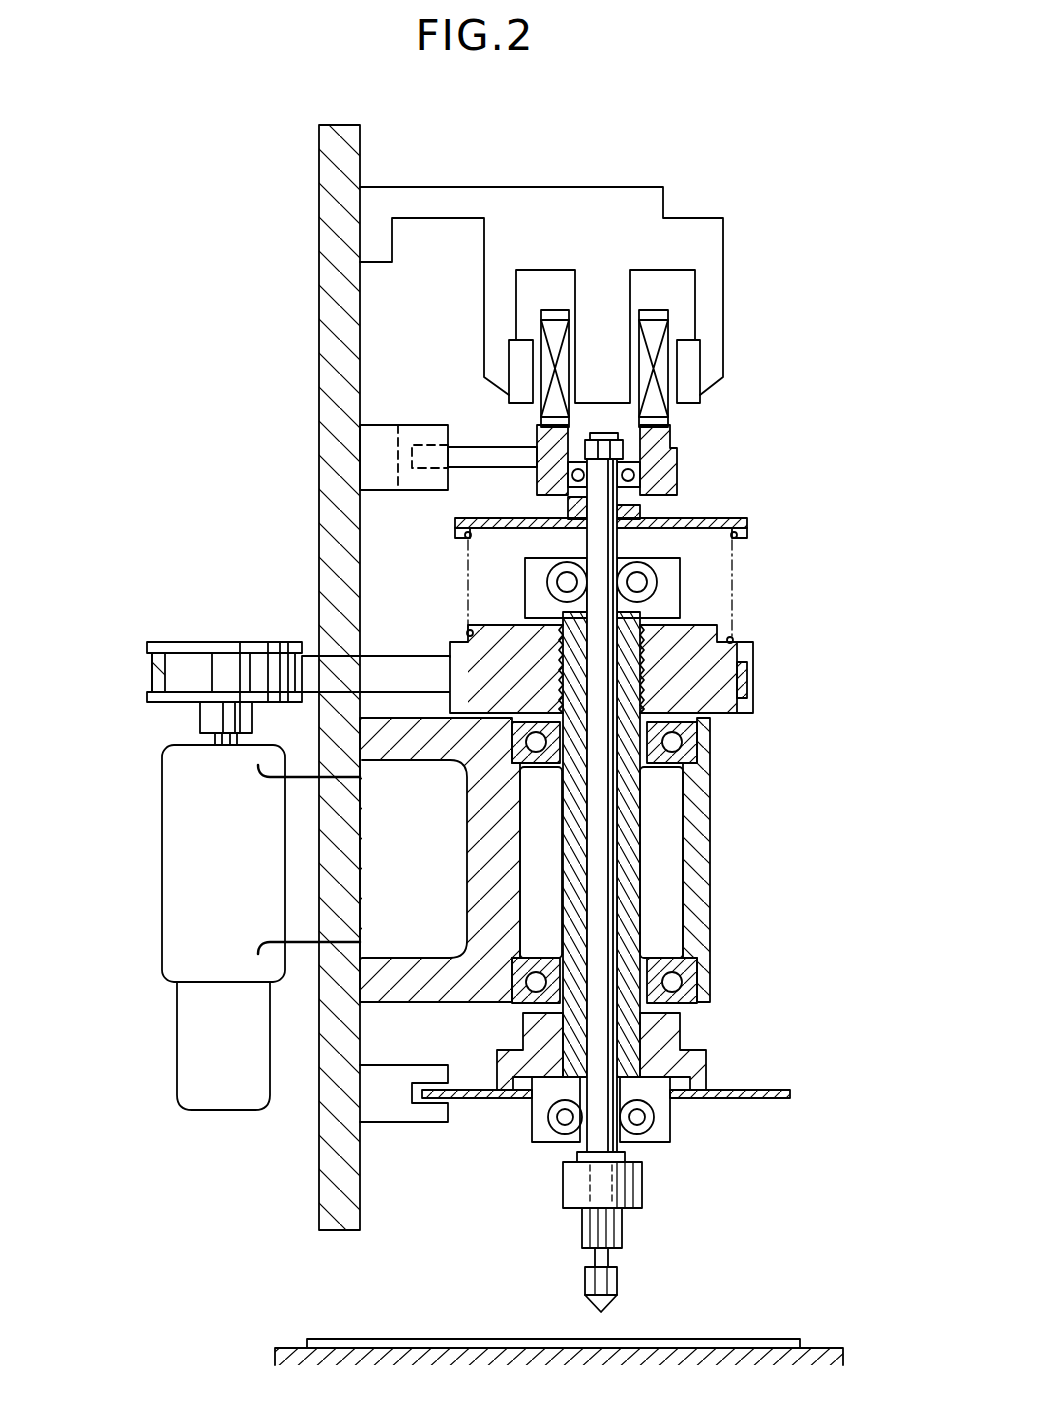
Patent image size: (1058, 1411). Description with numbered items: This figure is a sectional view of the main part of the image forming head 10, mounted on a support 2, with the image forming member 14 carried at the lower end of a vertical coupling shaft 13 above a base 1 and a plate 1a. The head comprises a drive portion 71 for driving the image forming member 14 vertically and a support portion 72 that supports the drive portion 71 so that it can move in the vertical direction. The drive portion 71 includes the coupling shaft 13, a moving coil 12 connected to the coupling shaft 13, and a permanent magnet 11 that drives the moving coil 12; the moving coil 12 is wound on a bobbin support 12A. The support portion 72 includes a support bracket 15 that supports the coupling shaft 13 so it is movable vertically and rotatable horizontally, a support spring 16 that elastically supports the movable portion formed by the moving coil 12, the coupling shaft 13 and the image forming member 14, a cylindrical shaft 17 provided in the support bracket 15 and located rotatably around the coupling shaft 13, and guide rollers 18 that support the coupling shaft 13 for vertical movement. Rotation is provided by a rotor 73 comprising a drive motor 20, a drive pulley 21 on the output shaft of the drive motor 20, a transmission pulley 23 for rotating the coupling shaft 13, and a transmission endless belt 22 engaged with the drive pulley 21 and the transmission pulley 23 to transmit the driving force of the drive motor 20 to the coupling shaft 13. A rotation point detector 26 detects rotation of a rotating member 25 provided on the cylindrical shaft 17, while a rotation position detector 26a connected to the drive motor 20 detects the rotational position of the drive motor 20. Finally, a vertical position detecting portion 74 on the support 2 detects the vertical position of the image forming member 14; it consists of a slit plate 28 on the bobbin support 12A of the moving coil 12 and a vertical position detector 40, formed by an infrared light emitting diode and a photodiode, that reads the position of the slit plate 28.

The base 1 is at (835, 1348).
The workpiece plate 1a is at (760, 1339).
The support 2 is at (318, 318).
The image forming head 10 is at (626, 887).
The permanent magnet 11 is at (737, 318).
The moving coil 12 is at (670, 413).
The bobbin support 12A is at (672, 480).
The coupling shaft 13 is at (610, 865).
The image forming member 14 is at (615, 1300).
The support bracket 15 is at (713, 880).
The support spring 16 is at (742, 558).
The cylindrical shaft 17 is at (570, 895).
The guide rollers 18 is at (648, 562).
The drive motor 20 is at (162, 810).
The drive pulley 21 is at (205, 642).
The transmission endless belt 22 is at (405, 656).
The transmission pulley 23 is at (740, 703).
The rotating member 25 is at (775, 1090).
The rotation point detector 26 is at (432, 1065).
The rotation position detector 26a is at (200, 1112).
The slit plate 28 is at (510, 468).
The vertical position detector 40 is at (440, 425).
The drive portion 71 is at (602, 350).
The support portion 72 is at (670, 654).
The rotor 73 is at (255, 873).
The vertical position detecting portion 74 is at (267, 677).